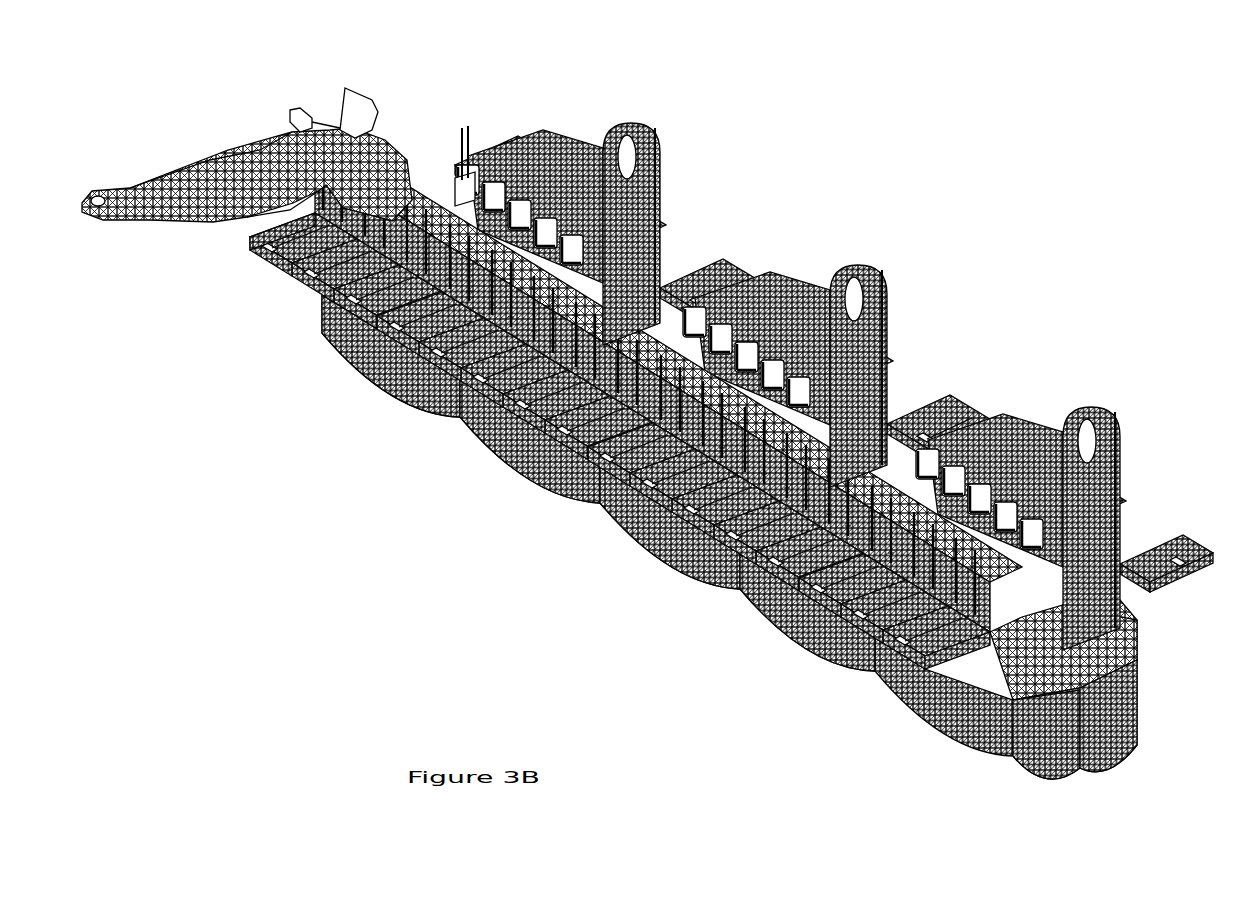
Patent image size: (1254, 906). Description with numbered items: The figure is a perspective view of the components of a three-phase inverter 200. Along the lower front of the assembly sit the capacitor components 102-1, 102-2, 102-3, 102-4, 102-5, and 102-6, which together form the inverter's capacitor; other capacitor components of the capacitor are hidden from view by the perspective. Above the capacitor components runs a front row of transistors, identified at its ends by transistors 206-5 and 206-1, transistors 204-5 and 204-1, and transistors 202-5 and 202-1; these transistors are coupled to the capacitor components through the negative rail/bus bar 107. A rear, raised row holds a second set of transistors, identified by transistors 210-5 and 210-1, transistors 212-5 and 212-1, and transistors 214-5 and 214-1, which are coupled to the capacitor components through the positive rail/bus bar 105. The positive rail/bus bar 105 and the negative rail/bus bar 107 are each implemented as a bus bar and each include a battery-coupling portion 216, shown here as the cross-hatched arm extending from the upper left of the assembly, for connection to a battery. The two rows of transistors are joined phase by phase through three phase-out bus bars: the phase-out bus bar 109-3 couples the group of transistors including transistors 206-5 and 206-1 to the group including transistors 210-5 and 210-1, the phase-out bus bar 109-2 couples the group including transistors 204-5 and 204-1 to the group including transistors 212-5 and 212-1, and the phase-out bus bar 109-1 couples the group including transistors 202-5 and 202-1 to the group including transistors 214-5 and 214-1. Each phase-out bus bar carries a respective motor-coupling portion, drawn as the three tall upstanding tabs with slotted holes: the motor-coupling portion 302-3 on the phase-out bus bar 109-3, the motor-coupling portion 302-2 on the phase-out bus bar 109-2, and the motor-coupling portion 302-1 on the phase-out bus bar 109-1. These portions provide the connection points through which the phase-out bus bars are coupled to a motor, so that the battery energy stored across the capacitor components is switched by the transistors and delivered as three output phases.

The three-phase inverter 200 is at (1040, 120).
The battery-coupling portion 216 is at (345, 88).
The positive rail/bus bar 105 is at (462, 195).
The negative rail/bus bar 107 is at (1043, 627).
The phase-out bus bar 109-1 is at (1107, 628).
The phase-out bus bar 109-2 is at (730, 393).
The phase-out bus bar 109-3 is at (480, 233).
The motor-coupling portion 302-1 is at (1103, 423).
The motor-coupling portion 302-2 is at (876, 300).
The motor-coupling portion 302-3 is at (657, 172).
The transistor 210-5 is at (573, 147).
The transistor 210-1 is at (720, 240).
The transistor 212-5 is at (797, 287).
The transistor 212-1 is at (922, 385).
The transistor 214-5 is at (1007, 425).
The transistor 214-1 is at (1185, 548).
The transistor 206-5 is at (263, 263).
The transistor 206-1 is at (423, 373).
The transistor 204-5 is at (487, 433).
The transistor 204-1 is at (686, 548).
The transistor 202-5 is at (717, 578).
The transistor 202-1 is at (888, 683).
The capacitor component 102-1 is at (1030, 767).
The capacitor component 102-2 is at (1168, 763).
The capacitor component 102-3 is at (823, 648).
The capacitor component 102-4 is at (632, 515).
The capacitor component 102-5 is at (567, 483).
The capacitor component 102-6 is at (363, 348).